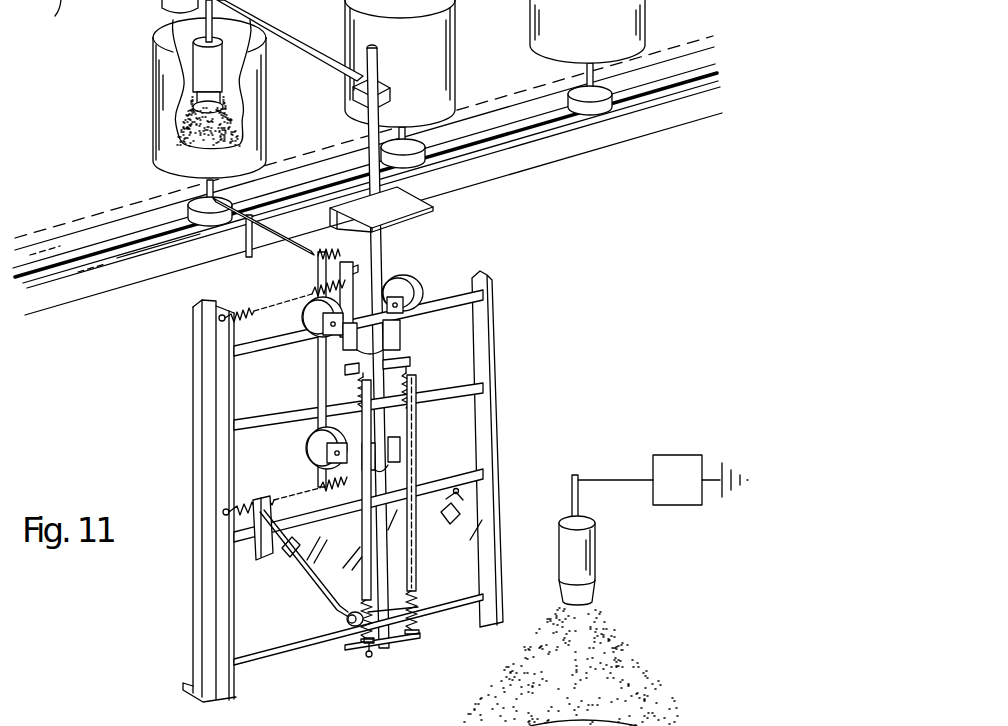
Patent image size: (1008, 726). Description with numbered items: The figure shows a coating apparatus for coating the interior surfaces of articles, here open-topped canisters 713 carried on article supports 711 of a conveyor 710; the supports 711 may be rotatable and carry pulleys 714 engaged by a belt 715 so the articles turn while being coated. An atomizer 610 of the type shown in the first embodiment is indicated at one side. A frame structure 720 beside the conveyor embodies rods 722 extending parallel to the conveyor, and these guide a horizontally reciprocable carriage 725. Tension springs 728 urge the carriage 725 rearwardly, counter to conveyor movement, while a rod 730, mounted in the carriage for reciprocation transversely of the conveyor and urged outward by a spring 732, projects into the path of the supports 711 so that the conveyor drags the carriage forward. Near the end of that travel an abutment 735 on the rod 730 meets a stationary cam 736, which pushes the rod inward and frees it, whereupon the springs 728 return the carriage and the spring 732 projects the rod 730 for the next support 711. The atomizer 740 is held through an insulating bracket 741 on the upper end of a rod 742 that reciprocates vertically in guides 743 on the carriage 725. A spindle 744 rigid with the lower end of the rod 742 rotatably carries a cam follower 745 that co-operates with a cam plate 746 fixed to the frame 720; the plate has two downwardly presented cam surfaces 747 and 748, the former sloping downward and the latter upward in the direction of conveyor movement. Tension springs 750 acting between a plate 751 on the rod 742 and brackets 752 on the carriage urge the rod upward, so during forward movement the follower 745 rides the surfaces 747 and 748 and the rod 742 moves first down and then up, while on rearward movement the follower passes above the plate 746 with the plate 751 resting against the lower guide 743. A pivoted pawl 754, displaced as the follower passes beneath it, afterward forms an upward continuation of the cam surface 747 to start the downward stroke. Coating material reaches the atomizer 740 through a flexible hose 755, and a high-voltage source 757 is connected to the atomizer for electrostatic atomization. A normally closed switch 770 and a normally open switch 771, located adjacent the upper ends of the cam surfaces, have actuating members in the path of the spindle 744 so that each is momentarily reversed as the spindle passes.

The atomizer 610 is at (596, 562).
The conveyor 710 is at (125, 275).
The article supports 711 is at (200, 187).
The open-topped canisters 713 is at (153, 88).
The pulleys 714 is at (601, 113).
The belt 715 is at (512, 100).
The frame structure 720 is at (487, 342).
The rods 722 is at (466, 297).
The carriage 725 is at (318, 378).
The tension springs 728 is at (253, 318).
The rod 730 is at (290, 243).
The spring 732 is at (313, 270).
The abutment 735 is at (245, 238).
The stationary cam 736 is at (392, 220).
The atomizer 740 is at (192, 63).
The insulating bracket 741 is at (277, 27).
The rod 742 is at (382, 250).
The guides 743 is at (401, 337).
The spindle 744 is at (352, 642).
The cam follower 745 is at (347, 630).
The cam plate 746 is at (422, 505).
The cam surface 747 is at (317, 603).
The cam surface 748 is at (397, 555).
The tension springs 750 is at (375, 645).
The plate 751 is at (385, 653).
The brackets 752 is at (405, 367).
The pivoted pawl 754 is at (293, 531).
The flexible hose 755 is at (163, 7).
The high-voltage source 757 is at (55, 16).
The normally closed switch 770 is at (461, 509).
The normally open switch 771 is at (295, 559).